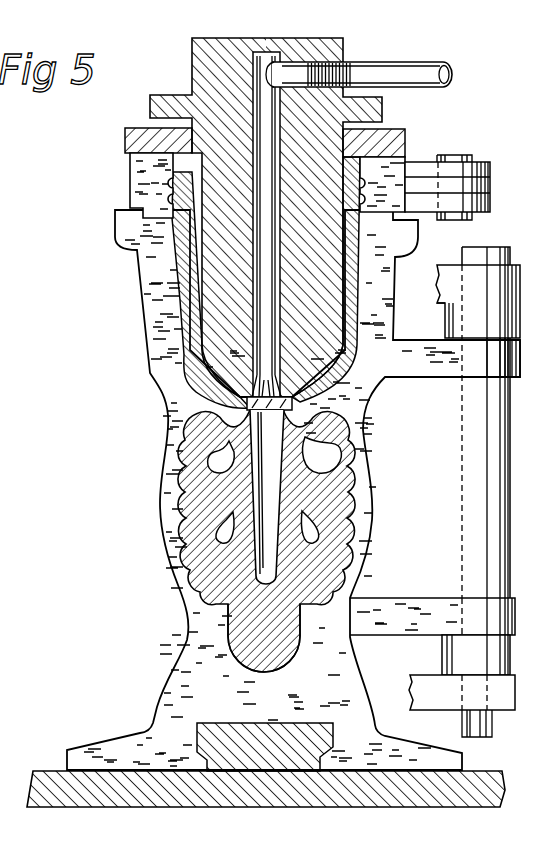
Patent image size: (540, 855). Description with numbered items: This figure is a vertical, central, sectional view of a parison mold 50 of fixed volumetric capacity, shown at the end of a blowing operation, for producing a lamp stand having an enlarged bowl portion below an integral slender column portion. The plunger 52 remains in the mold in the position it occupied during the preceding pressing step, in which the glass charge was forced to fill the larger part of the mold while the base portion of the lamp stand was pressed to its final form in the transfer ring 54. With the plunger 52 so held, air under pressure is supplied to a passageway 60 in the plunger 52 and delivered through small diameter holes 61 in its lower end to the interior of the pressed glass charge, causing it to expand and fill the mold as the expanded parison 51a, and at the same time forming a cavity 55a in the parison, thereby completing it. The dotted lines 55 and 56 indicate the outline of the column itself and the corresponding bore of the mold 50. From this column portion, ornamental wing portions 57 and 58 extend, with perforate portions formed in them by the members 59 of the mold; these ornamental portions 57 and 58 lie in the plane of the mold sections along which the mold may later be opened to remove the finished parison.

The parison mold 50 is at (160, 372).
The expanded parison 51a is at (188, 628).
The plunger 52 is at (215, 318).
The transfer ring 54 is at (135, 180).
The dotted line showing column outline 55 is at (254, 541).
The cavity 55a is at (262, 563).
The dotted line showing column outline 56 is at (260, 541).
The ornamental wing portion 57 is at (235, 563).
The ornamental wing portion 58 is at (330, 572).
The members of the mold 59 is at (218, 455).
The passageway 60 is at (262, 256).
The small diameter holes 61 is at (250, 402).